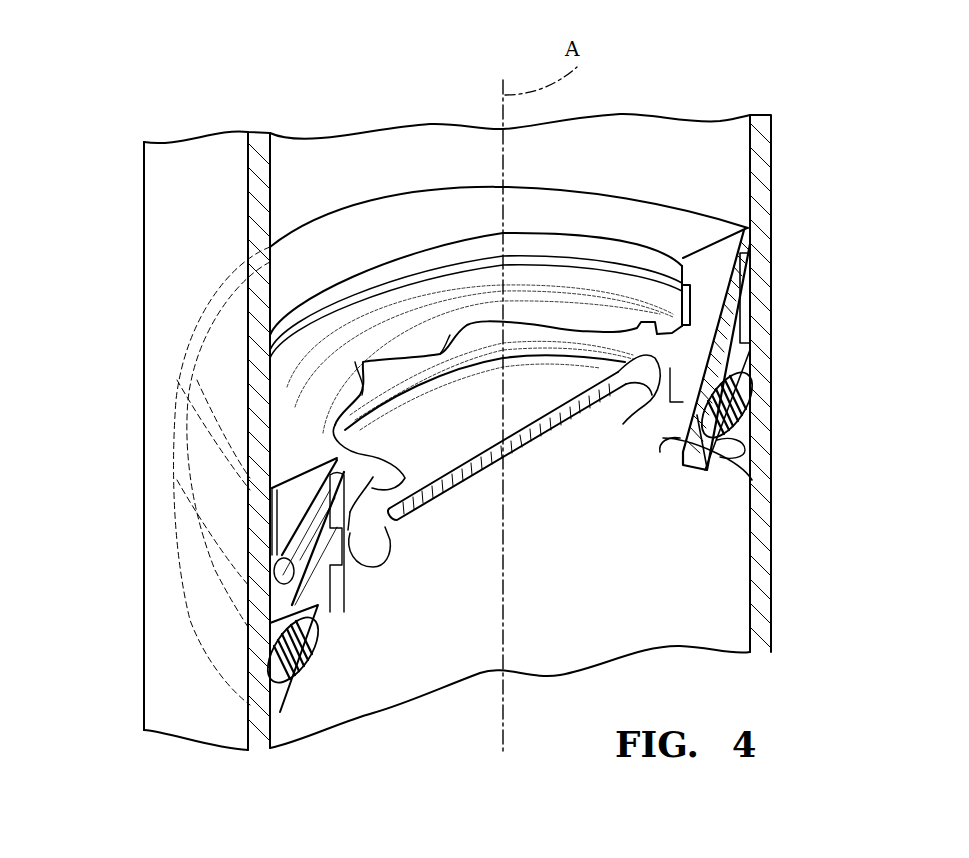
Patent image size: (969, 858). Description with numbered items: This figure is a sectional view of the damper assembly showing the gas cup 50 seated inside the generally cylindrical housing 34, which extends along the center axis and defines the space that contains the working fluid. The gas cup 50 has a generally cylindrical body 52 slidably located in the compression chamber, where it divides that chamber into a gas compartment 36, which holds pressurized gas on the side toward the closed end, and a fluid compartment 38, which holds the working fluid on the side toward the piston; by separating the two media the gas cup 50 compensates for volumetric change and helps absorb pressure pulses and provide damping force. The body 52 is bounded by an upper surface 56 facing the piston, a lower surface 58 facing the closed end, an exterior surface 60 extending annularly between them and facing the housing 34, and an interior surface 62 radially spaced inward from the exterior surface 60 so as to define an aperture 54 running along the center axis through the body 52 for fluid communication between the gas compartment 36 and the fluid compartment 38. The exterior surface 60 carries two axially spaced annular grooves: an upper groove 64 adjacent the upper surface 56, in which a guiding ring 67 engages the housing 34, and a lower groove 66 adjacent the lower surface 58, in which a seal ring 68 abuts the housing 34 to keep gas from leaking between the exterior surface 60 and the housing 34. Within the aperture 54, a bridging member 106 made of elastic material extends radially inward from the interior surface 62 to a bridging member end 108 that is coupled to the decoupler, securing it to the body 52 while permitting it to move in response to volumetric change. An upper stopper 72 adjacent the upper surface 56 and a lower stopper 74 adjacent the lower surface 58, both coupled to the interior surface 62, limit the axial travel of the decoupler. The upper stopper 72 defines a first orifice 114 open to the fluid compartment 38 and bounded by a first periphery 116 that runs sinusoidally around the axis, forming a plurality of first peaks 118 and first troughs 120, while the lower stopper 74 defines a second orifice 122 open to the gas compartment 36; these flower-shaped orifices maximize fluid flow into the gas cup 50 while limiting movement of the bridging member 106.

The housing 34 is at (763, 172).
The gas compartment 36 is at (752, 578).
The fluid compartment 38 is at (752, 211).
The gas cup 50 is at (755, 345).
The body 52 is at (740, 317).
The aperture 54 is at (545, 437).
The upper surface 56 is at (596, 206).
The lower surface 58 is at (722, 475).
The exterior surface 60 is at (173, 443).
The interior surface 62 is at (621, 255).
The upper groove 64 is at (272, 575).
The lower groove 66 is at (317, 660).
The guiding ring 67 is at (747, 275).
The seal ring 68 is at (747, 422).
The upper stopper 72 is at (390, 300).
The lower stopper 74 is at (367, 580).
The bridging member 106 is at (279, 555).
The bridging member end 108 is at (393, 527).
The first orifice 114 is at (482, 305).
The first periphery 116 is at (365, 362).
The first peaks 118 is at (447, 335).
The first troughs 120 is at (336, 425).
The second orifice 122 is at (613, 412).